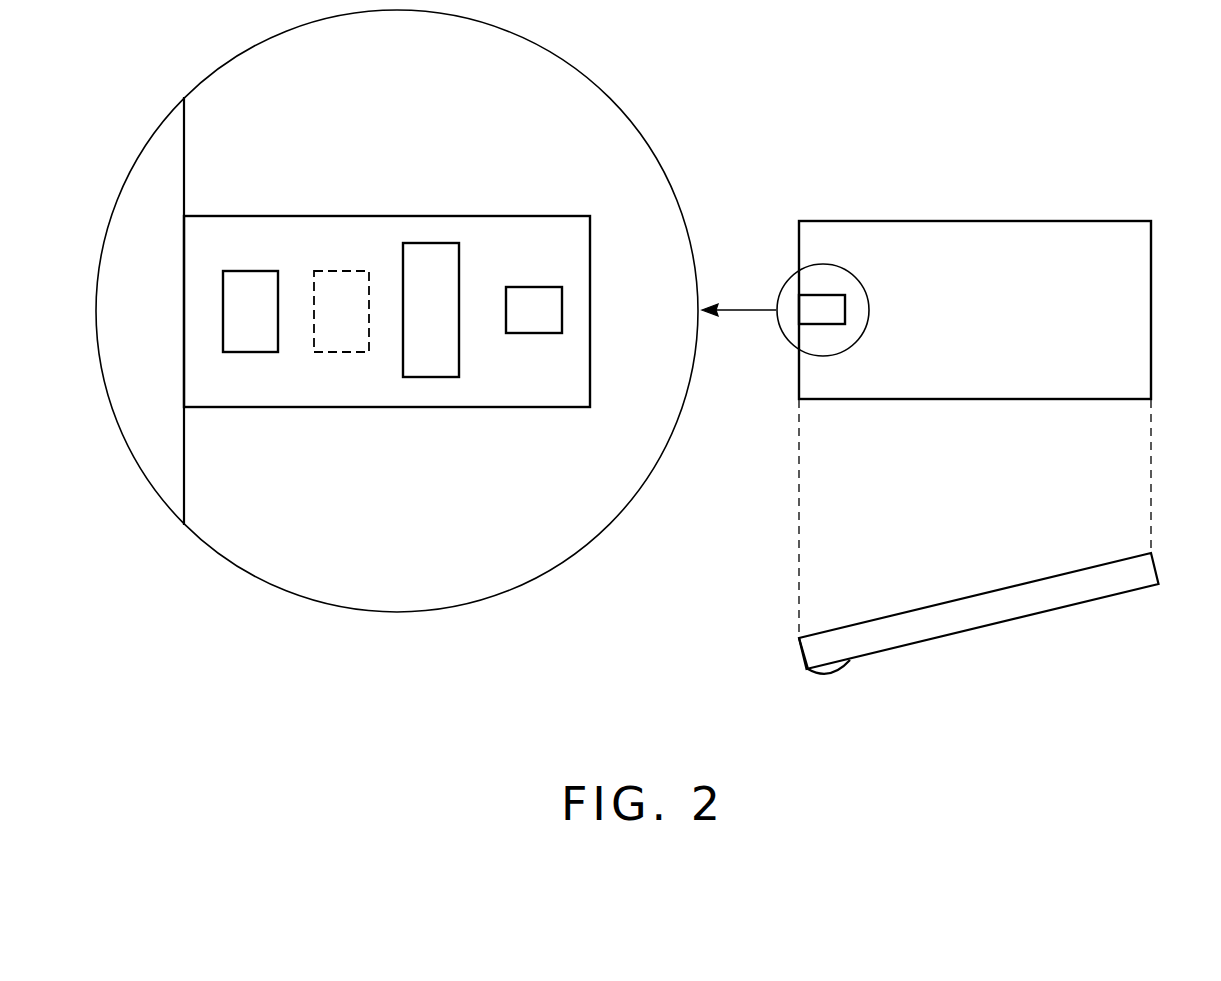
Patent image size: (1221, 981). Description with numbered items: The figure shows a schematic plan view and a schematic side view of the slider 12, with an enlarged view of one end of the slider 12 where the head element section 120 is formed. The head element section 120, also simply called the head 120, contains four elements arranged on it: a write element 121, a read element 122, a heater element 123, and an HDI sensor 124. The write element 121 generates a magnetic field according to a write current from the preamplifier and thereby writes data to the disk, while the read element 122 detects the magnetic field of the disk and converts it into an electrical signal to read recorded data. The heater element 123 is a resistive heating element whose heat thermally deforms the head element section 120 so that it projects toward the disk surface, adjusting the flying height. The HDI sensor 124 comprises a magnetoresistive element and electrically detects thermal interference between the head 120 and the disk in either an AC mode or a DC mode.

The slider 12 is at (1102, 220).
The head element section 120 is at (503, 408).
The write element 121 is at (256, 271).
The read element 122 is at (542, 287).
The heater element 123 is at (345, 271).
The HDI sensor 124 is at (438, 243).